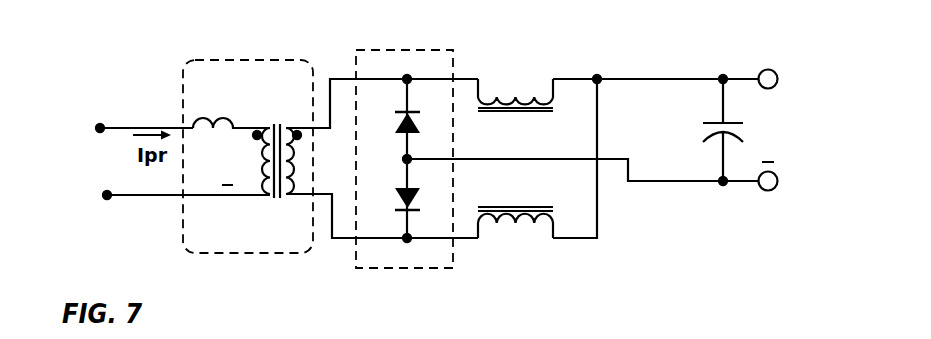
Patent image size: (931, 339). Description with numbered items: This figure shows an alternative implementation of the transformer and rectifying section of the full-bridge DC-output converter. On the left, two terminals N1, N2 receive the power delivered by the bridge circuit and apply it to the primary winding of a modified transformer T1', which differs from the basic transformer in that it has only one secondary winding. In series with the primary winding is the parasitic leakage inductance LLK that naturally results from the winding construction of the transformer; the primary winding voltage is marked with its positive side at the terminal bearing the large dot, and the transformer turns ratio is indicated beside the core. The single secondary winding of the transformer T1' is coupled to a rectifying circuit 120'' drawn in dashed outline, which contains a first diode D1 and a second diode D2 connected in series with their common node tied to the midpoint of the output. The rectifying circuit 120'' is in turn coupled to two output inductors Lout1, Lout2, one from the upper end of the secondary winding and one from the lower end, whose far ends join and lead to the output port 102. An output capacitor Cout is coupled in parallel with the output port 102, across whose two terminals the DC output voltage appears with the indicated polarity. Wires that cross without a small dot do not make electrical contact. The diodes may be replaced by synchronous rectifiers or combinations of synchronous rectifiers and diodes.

The output port 102 is at (758, 68).
The rectifying circuit 120'' is at (442, 139).
The modified transformer T1' is at (248, 178).
The first diode D1 is at (391, 198).
The second diode D2 is at (391, 119).
The output inductor Lout1 is at (515, 210).
The output inductor Lout2 is at (515, 109).
The output capacitor Cout is at (703, 130).
The parasitic leakage inductance LLK is at (231, 107).
The input node N1 is at (107, 195).
The input node N2 is at (100, 128).